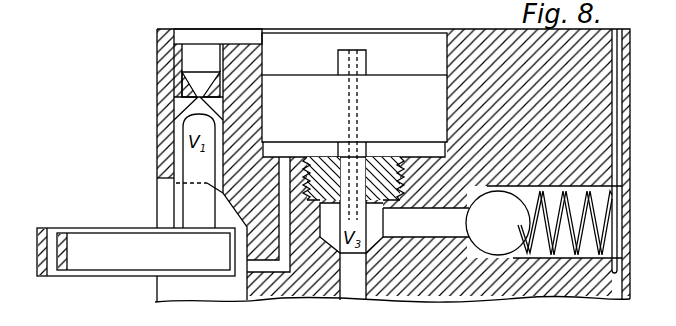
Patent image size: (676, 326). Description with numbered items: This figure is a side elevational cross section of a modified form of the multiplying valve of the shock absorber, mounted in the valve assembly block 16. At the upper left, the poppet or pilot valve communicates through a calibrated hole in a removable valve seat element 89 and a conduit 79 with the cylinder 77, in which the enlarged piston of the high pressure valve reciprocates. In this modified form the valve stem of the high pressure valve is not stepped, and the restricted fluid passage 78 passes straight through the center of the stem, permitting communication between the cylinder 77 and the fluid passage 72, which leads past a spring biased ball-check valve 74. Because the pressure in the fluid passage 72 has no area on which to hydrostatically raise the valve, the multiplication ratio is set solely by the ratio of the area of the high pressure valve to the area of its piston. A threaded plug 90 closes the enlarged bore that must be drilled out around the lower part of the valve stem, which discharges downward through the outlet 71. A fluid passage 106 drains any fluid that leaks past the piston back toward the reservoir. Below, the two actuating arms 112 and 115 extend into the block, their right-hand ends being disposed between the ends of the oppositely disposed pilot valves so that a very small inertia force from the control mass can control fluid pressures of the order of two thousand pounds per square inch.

The removable valve seat element 89 is at (178, 43).
The conduit 79 is at (233, 34).
The cylinder 77 is at (421, 69).
The valve block 16 is at (428, 110).
The restricted fluid passage 78 is at (348, 99).
The threaded plug 90 is at (400, 184).
The fluid passage 106 is at (280, 201).
The fluid passage 72 is at (441, 234).
The spring biased ball-check valve 74 is at (506, 224).
The outlet passage 71 is at (360, 287).
The control arm 112 is at (101, 204).
The actuating arm 115 is at (127, 271).